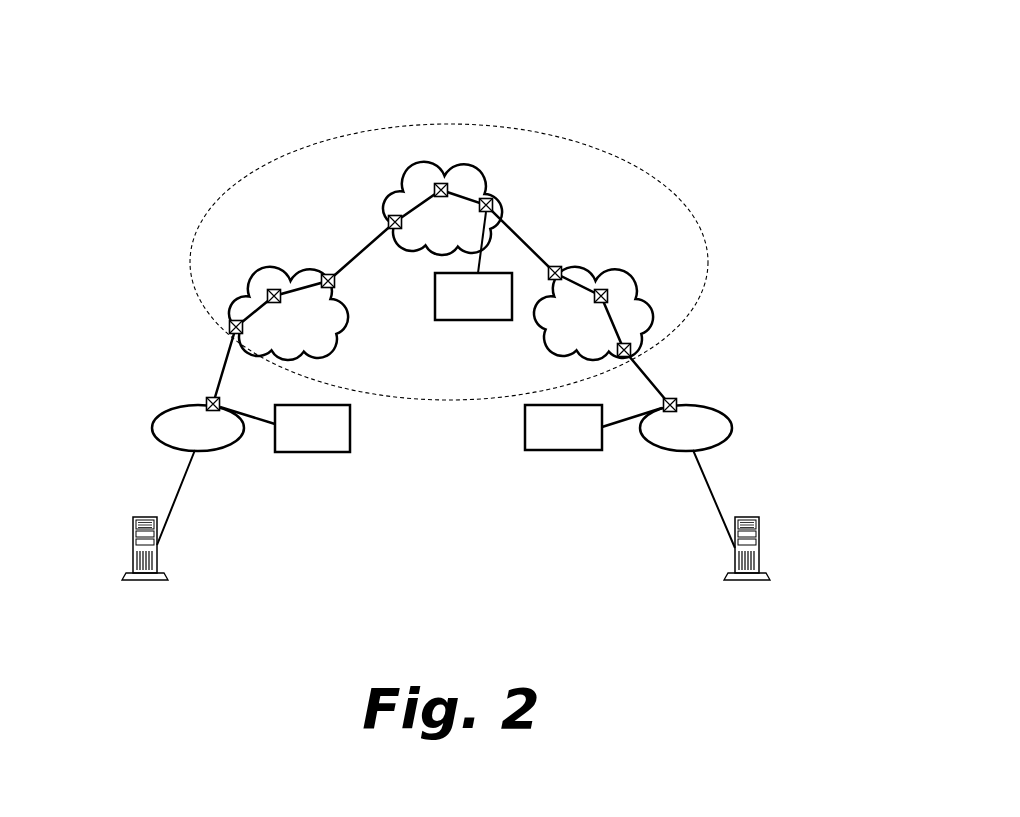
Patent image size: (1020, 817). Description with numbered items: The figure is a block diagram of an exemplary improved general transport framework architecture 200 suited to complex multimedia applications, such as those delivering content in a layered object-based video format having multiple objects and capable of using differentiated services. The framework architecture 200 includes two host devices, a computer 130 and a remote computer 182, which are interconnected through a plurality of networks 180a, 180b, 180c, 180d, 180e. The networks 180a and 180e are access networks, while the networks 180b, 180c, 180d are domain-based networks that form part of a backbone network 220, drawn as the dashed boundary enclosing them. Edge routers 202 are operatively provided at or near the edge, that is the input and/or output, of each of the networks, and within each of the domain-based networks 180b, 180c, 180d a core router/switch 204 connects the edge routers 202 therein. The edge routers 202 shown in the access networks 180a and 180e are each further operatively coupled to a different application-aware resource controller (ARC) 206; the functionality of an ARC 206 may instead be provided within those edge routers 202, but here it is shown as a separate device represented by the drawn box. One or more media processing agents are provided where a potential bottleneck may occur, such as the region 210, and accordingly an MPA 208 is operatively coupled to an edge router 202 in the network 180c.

The general transport framework architecture 200 is at (221, 66).
The edge router 202 is at (227, 327).
The core router/switch 204 is at (440, 185).
The application-aware resource controller (ARC) 206 is at (315, 452).
The media processing agent (MPA) 208 is at (435, 287).
The region 210 is at (556, 231).
The backbone network 220 is at (690, 210).
The access network 180a is at (152, 430).
The domain-based network 180b is at (327, 350).
The domain-based network 180c is at (482, 168).
The domain-based network 180d is at (552, 337).
The access network 180e is at (730, 417).
The computer 130 is at (160, 567).
The remote computer 182 is at (760, 565).